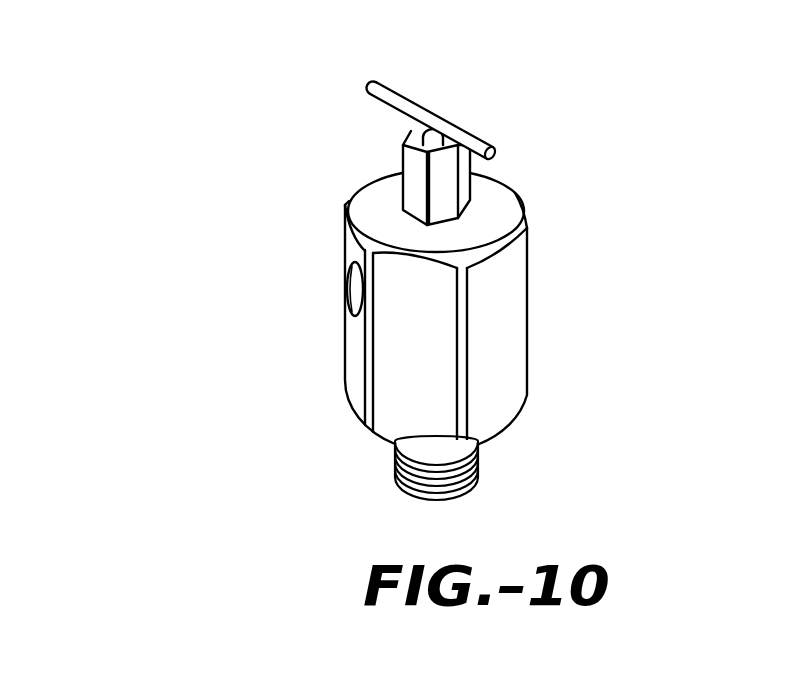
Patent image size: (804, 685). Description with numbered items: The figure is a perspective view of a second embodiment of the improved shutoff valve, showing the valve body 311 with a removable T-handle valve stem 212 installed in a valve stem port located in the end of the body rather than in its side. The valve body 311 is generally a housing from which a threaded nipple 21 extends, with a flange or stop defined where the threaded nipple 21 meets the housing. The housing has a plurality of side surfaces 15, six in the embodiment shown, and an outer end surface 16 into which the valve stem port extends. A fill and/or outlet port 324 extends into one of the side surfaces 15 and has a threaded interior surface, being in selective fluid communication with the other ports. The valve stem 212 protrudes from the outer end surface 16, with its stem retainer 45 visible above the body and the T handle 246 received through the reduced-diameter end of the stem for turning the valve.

The valve body 311 is at (372, 271).
The valve stem 212 is at (526, 88).
The T handle 246 is at (477, 147).
The stem retainer 45 is at (412, 170).
The outer end surface 16 is at (505, 205).
The fill and/or outlet port 324 is at (355, 282).
The side surfaces 15 is at (350, 353).
The threaded nipple 21 is at (397, 467).